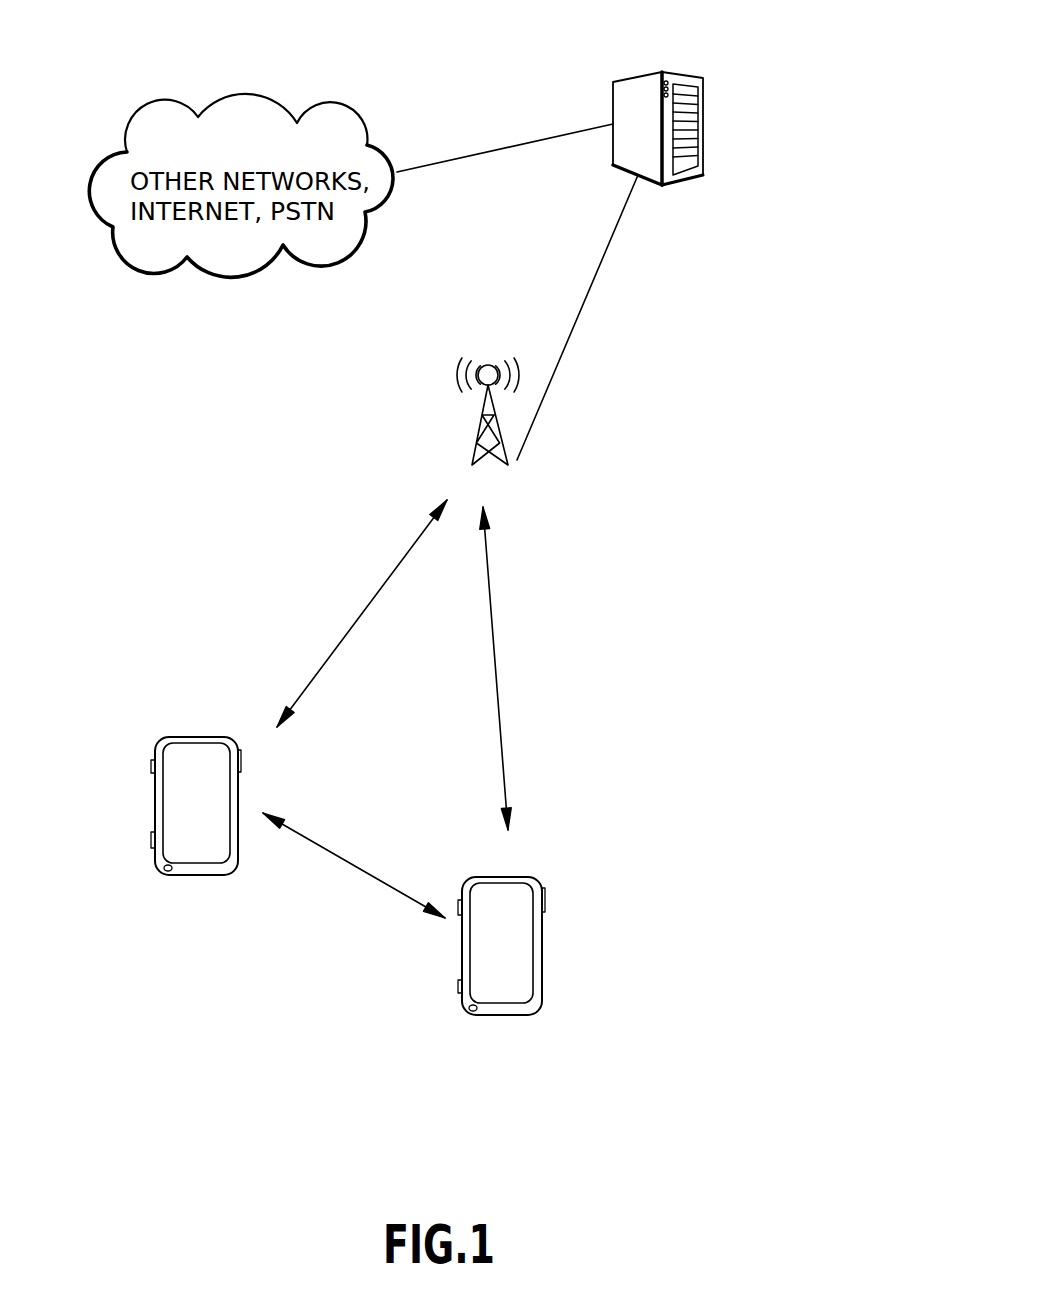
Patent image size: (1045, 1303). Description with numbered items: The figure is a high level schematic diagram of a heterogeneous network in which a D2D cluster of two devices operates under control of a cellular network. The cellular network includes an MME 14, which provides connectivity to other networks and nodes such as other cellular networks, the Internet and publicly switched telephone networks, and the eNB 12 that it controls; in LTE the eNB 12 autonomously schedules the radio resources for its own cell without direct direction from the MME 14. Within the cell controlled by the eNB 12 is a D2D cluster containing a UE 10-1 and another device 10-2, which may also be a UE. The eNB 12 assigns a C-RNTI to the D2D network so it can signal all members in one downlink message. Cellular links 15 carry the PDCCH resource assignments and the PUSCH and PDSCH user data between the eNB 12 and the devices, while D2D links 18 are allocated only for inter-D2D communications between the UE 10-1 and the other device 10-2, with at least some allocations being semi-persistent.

The MME 14 is at (624, 80).
The eNB 12 is at (447, 375).
The cellular links 15 is at (487, 623).
The D2D links 18 is at (320, 848).
The UE 10-1 is at (160, 742).
The other device 10-2 is at (543, 952).